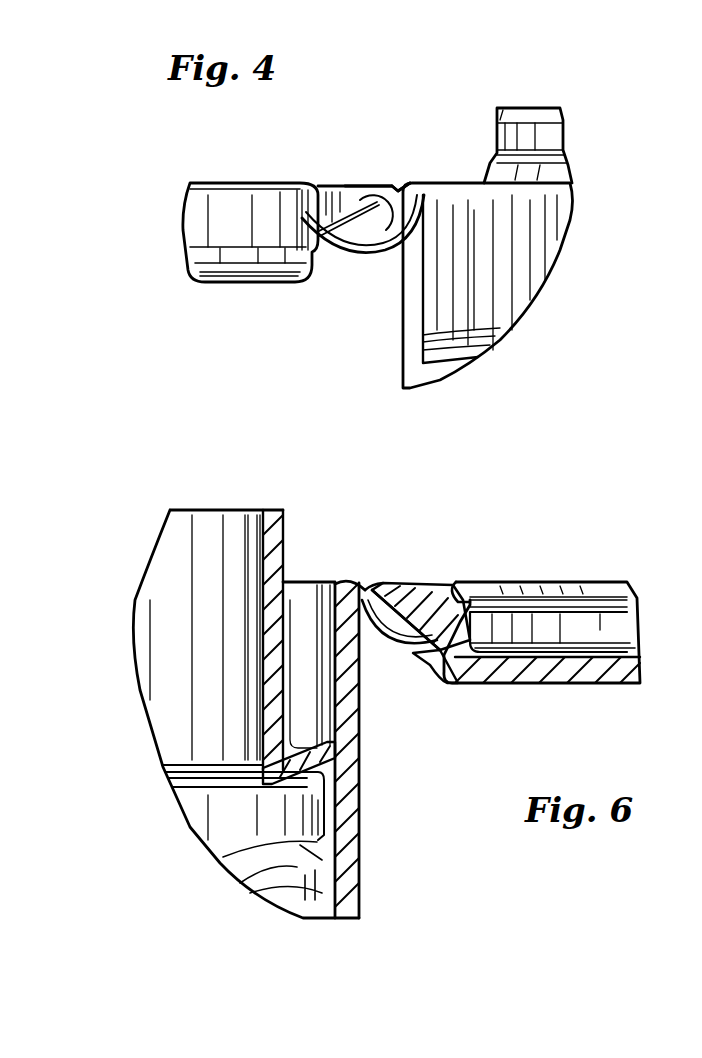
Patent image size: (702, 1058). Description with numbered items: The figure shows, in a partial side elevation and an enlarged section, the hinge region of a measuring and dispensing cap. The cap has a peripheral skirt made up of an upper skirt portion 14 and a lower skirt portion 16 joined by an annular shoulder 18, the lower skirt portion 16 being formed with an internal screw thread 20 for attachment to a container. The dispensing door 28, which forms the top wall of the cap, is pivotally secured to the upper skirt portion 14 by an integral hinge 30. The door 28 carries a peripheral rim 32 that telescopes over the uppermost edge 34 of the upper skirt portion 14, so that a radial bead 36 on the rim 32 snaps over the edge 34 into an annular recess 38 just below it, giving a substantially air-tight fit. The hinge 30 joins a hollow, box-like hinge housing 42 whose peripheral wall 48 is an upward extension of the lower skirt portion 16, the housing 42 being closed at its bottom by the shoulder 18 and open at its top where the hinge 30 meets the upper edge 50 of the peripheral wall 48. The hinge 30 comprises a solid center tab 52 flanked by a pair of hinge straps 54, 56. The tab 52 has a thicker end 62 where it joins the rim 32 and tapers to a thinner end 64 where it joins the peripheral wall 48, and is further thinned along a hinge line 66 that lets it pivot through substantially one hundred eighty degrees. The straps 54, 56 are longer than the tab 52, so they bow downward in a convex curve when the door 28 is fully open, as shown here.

In FIG. 6, the upper skirt portion 14 is at (300, 590).
In FIG. 6, the lower skirt portion 16 is at (359, 858).
In FIG. 6, the annular shoulder 18 is at (290, 740).
In FIG. 6, the internal screw thread 20 is at (255, 850).
In FIG. 4, the dispensing door 28 is at (252, 282).
In FIG. 6, the dispensing door 28 is at (579, 687).
In FIG. 4, the hinge 30 is at (389, 178).
In FIG. 6, the hinge 30 is at (454, 561).
In FIG. 4, the peripheral rim 32 is at (200, 238).
In FIG. 6, the peripheral rim 32 is at (640, 632).
In FIG. 6, the uppermost edge 34 is at (272, 520).
In FIG. 6, the radial bead 36 is at (608, 600).
In FIG. 6, the annular recess 38 is at (283, 560).
In FIG. 4, the hinge housing 42 is at (403, 318).
In FIG. 6, the hinge housing 42 is at (361, 732).
In FIG. 6, the peripheral wall 48 is at (365, 655).
In FIG. 6, the upper edge 50 is at (341, 582).
In FIG. 4, the center tab 52 is at (358, 184).
In FIG. 6, the center tab 52 is at (419, 586).
In FIG. 4, the hinge strap 54 is at (390, 250).
In FIG. 6, the hinge strap 56 is at (432, 656).
In FIG. 4, the thicker end 62 is at (332, 193).
In FIG. 6, the thicker end 62 is at (463, 583).
In FIG. 4, the thinner end 64 is at (366, 245).
In FIG. 6, the thinner end 64 is at (396, 584).
In FIG. 4, the hinge line 66 is at (408, 184).
In FIG. 6, the hinge line 66 is at (368, 588).